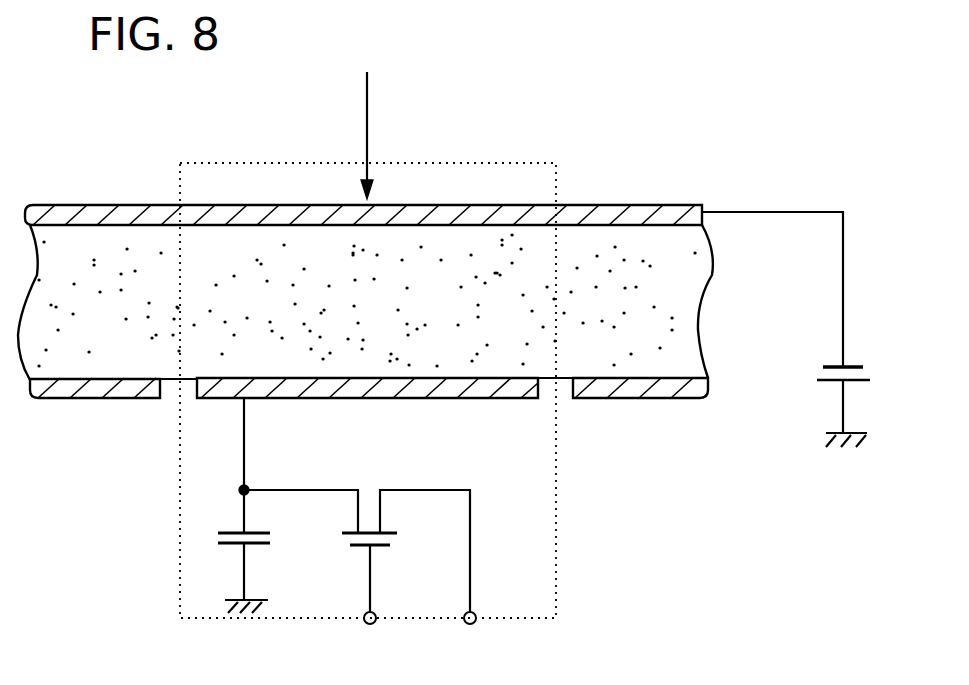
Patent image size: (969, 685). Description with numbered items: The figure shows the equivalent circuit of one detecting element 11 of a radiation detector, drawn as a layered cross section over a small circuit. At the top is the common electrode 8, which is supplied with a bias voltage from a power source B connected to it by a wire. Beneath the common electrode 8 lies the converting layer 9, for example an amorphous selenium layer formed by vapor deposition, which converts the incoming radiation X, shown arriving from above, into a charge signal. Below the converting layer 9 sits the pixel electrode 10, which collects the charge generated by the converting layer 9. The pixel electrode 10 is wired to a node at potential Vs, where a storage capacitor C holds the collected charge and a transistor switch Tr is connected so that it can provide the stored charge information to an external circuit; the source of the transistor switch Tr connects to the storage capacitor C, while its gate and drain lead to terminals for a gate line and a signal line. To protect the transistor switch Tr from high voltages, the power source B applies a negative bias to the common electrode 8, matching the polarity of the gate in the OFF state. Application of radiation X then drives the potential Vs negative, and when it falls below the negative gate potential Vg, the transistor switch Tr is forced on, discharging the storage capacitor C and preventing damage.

The common electrode 8 is at (642, 205).
The converting layer 9 is at (686, 318).
The pixel electrode 10 is at (508, 390).
The detecting element 11 is at (512, 156).
The radiation X is at (367, 118).
The potential of the storage capacitor Vs is at (334, 511).
The storage capacitor C is at (257, 568).
The transistor switch Tr is at (387, 574).
The negative potential of the gate Vg is at (373, 639).
The power source B is at (802, 329).